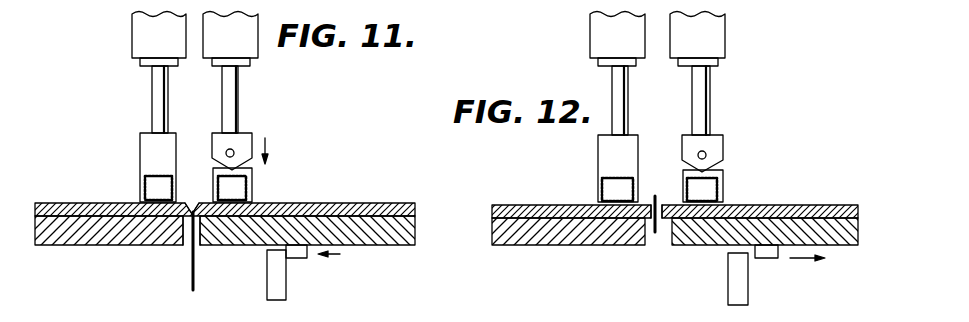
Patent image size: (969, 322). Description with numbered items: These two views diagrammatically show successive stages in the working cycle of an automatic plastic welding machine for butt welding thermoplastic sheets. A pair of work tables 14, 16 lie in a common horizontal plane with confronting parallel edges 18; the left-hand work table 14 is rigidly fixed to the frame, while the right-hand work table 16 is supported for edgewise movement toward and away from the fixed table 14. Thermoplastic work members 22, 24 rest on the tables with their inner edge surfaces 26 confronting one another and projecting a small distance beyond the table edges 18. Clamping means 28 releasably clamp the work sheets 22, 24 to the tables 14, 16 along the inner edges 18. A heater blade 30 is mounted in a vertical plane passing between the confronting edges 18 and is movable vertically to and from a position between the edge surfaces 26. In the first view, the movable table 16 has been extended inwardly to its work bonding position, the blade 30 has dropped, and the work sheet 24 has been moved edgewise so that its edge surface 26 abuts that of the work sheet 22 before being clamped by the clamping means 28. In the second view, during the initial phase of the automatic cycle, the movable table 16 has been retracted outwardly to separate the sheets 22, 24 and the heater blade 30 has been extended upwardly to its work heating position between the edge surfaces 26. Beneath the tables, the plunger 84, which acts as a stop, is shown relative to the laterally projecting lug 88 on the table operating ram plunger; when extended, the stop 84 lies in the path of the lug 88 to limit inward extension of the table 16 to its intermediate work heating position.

In FIG. 11, the work table 14 is at (85, 249).
In FIG. 12, the work table 14 is at (567, 247).
In FIG. 11, the work table 16 is at (396, 246).
In FIG. 12, the work table 16 is at (836, 249).
In FIG. 11, the confronting parallel edges 18 is at (186, 238).
In FIG. 11, the work member 22 is at (80, 203).
In FIG. 12, the work member 22 is at (540, 200).
In FIG. 11, the work member 24 is at (300, 200).
In FIG. 12, the work member 24 is at (770, 200).
In FIG. 11, the edge surfaces 26 is at (196, 203).
In FIG. 12, the edge surfaces 26 is at (655, 200).
In FIG. 11, the clamping means 28 is at (126, 41).
In FIG. 12, the clamping means 28 is at (586, 50).
In FIG. 11, the heater blade 30 is at (190, 255).
In FIG. 12, the heater blade 30 is at (657, 236).
In FIG. 11, the plunger 84 is at (288, 297).
In FIG. 12, the plunger 84 is at (738, 279).
In FIG. 11, the lug 88 is at (302, 256).
In FIG. 12, the lug 88 is at (790, 253).